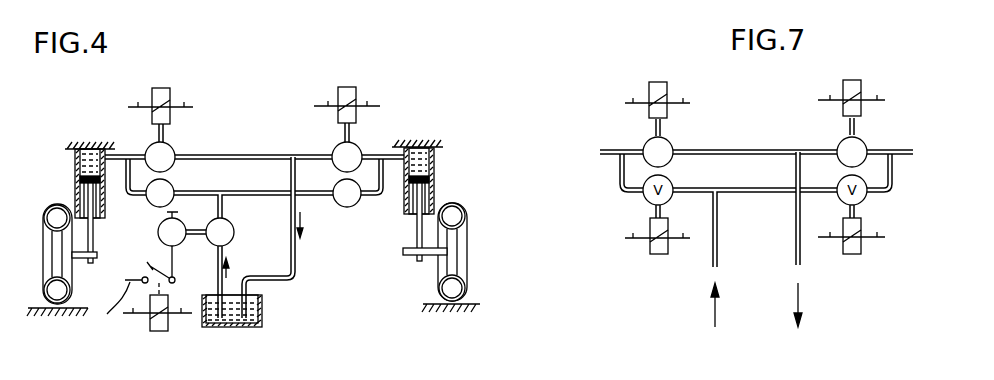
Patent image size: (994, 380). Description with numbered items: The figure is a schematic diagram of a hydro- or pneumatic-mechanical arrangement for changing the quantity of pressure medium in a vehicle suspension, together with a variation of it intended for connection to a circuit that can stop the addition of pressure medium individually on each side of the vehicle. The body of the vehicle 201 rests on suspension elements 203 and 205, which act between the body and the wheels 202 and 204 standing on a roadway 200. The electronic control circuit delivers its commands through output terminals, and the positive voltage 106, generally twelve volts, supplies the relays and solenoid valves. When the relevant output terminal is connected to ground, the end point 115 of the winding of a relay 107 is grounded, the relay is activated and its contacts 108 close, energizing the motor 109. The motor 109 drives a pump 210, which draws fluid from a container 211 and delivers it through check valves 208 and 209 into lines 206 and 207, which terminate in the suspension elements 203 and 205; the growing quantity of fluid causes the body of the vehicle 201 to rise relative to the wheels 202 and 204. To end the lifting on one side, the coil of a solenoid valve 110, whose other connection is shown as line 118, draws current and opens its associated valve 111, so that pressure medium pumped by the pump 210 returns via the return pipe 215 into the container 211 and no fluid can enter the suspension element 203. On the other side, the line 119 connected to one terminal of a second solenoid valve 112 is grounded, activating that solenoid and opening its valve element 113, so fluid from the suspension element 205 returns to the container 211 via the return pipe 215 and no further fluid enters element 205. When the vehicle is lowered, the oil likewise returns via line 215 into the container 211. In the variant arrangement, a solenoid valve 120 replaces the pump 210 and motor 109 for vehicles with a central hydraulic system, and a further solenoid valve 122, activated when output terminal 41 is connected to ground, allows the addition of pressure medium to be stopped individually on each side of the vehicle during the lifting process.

In FIG. 7, the output terminal 41 is at (877, 246).
In FIG. 4, the positive voltage 106 is at (184, 106).
In FIG. 7, the positive voltage 106 is at (683, 103).
In FIG. 4, the relay 107 is at (158, 333).
In FIG. 4, the relay contacts 108 is at (158, 268).
In FIG. 4, the motor 109 is at (159, 234).
In FIG. 4, the solenoid valve 110 is at (160, 88).
In FIG. 7, the solenoid valve 110 is at (660, 82).
In FIG. 4, the valve 111 is at (172, 149).
In FIG. 7, the valve 111 is at (670, 145).
In FIG. 4, the second solenoid valve 112 is at (347, 87).
In FIG. 7, the second solenoid valve 112 is at (851, 81).
In FIG. 4, the valve element 113 is at (334, 149).
In FIG. 7, the valve element 113 is at (840, 146).
In FIG. 4, the end point of relay winding 115 is at (181, 314).
In FIG. 7, the end point of relay winding 115 is at (632, 241).
In FIG. 4, the lead 118 is at (138, 106).
In FIG. 7, the lead 118 is at (633, 103).
In FIG. 4, the line 119 is at (367, 105).
In FIG. 7, the line 119 is at (877, 100).
In FIG. 7, the solenoid valve 120 is at (657, 256).
In FIG. 7, the further solenoid valve 122 is at (855, 256).
In FIG. 4, the roadway 200 is at (42, 318).
In FIG. 4, the body of the vehicle 201 is at (78, 146).
In FIG. 4, the wheel 202 is at (54, 203).
In FIG. 4, the suspension element 203 is at (75, 178).
In FIG. 4, the wheel 204 is at (452, 208).
In FIG. 4, the suspension element 205 is at (436, 175).
In FIG. 4, the line 206 is at (118, 156).
In FIG. 7, the line 206 is at (605, 150).
In FIG. 4, the line 207 is at (386, 152).
In FIG. 7, the line 207 is at (895, 150).
In FIG. 4, the check valve 208 is at (173, 187).
In FIG. 4, the check valve 209 is at (347, 208).
In FIG. 4, the pump 210 is at (230, 240).
In FIG. 4, the container 211 is at (245, 328).
In FIG. 4, the return pipe 215 is at (297, 262).
In FIG. 7, the return pipe 215 is at (797, 237).